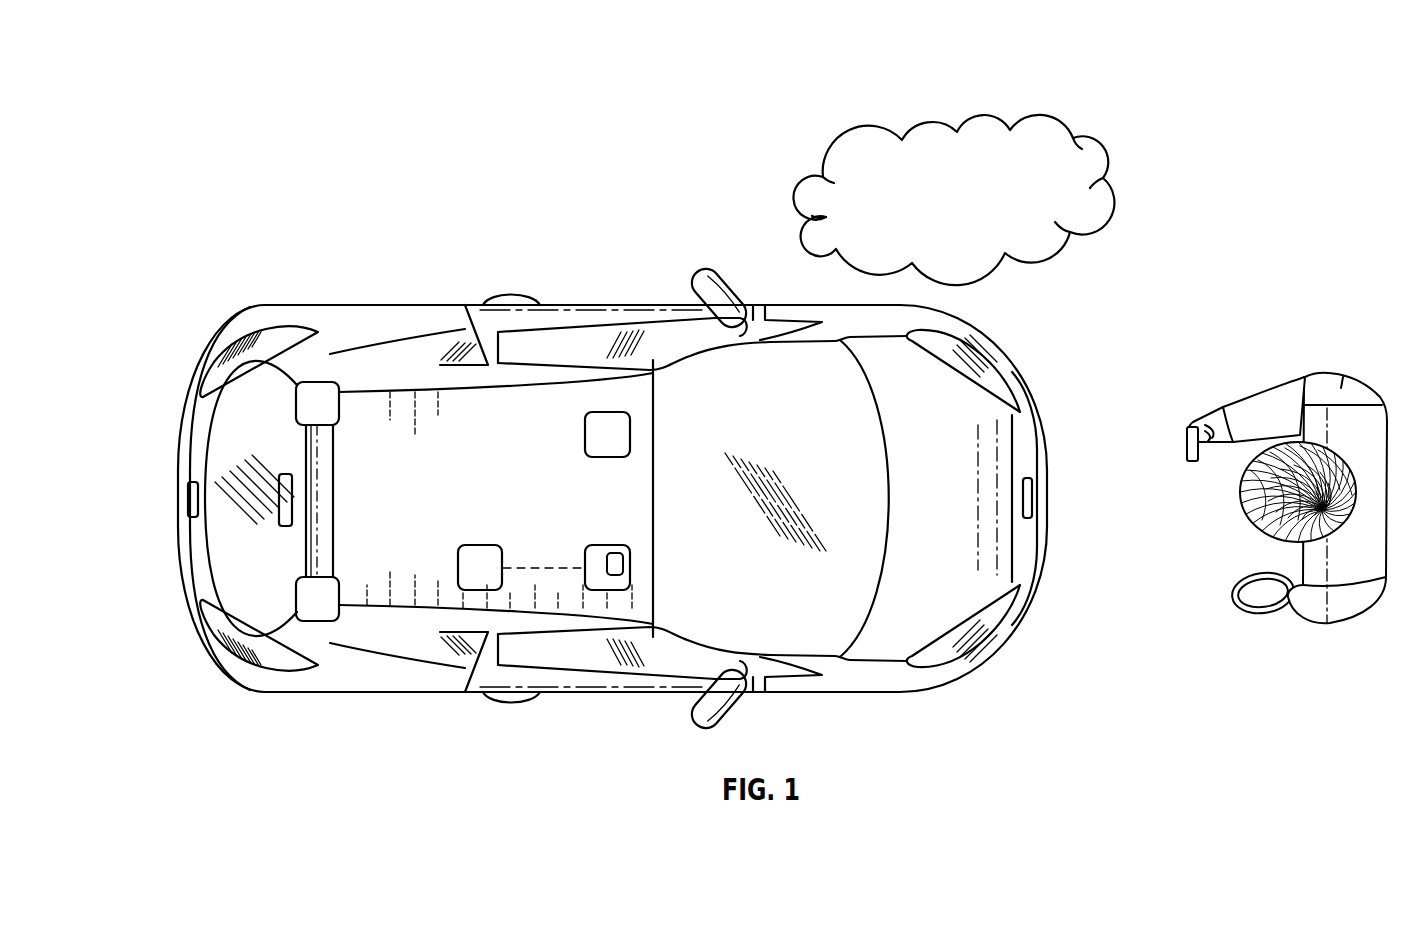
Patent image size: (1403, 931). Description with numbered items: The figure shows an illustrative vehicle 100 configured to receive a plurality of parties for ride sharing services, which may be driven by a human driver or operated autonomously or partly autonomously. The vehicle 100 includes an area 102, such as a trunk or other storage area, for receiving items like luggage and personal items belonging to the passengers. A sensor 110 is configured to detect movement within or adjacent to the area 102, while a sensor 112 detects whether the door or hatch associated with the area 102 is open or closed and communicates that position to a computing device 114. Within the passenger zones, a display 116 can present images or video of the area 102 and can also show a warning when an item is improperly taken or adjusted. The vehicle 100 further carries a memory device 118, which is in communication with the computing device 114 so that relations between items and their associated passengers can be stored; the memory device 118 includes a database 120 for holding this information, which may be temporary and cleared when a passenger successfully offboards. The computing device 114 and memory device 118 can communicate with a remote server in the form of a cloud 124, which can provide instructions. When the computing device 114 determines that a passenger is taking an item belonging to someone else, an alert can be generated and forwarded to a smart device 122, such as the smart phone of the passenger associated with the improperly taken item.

The vehicle 100 is at (203, 104).
The area 102 is at (196, 580).
The sensor 110 is at (308, 592).
The sensor 112 is at (308, 407).
The computing device 114 is at (478, 577).
The display 116 is at (615, 423).
The memory device 118 is at (597, 580).
The database 120 is at (613, 572).
The smart device 122 is at (1188, 440).
The cloud 124 is at (972, 206).